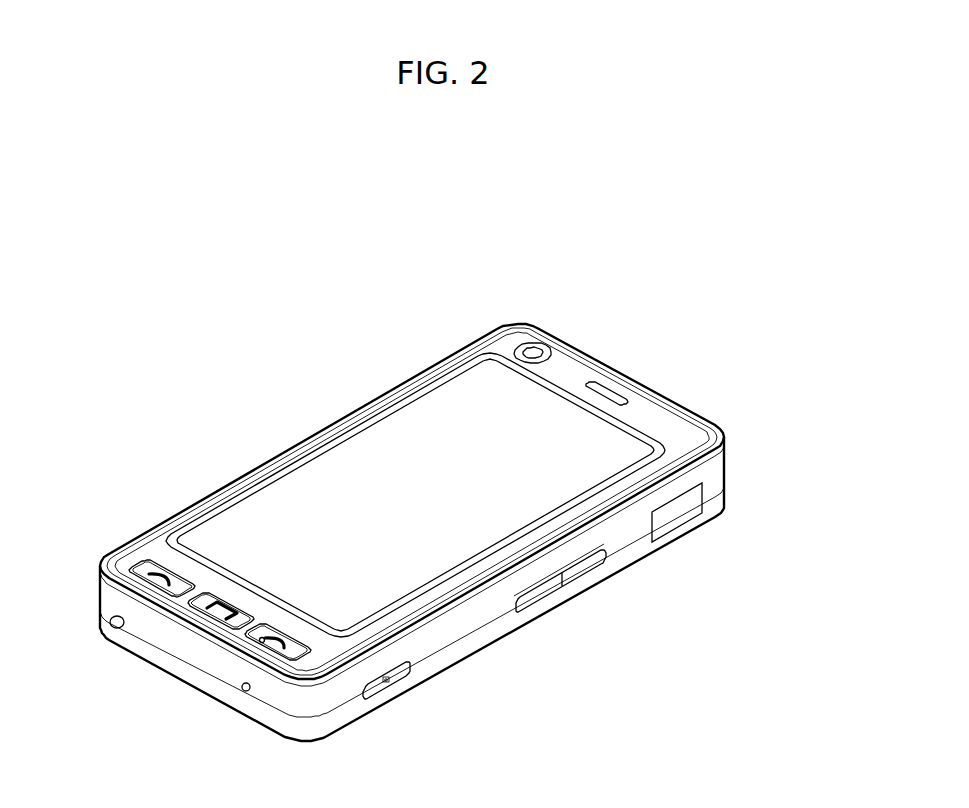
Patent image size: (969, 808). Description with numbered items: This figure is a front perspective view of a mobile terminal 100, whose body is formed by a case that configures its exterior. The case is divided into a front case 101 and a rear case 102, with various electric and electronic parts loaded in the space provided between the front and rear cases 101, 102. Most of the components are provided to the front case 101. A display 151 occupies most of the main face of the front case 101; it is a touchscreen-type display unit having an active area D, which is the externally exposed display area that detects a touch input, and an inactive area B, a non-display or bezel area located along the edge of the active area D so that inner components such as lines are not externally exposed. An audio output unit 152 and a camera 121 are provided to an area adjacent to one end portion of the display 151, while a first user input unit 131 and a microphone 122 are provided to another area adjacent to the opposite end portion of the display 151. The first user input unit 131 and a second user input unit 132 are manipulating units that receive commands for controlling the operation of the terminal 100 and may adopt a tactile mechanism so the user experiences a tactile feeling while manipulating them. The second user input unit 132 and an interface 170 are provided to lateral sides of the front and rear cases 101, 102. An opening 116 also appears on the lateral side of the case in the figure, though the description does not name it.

The mobile terminal 100 is at (392, 353).
The front case 101 is at (712, 467).
The rear case 102 is at (712, 498).
The interface 116 is at (117, 628).
The camera 121 is at (540, 352).
The microphone 122 is at (246, 691).
The first user input unit 131 is at (150, 568).
The second user input unit 132 is at (593, 563).
The display 151 is at (365, 452).
The audio output unit 152 is at (607, 395).
The interface 170 is at (672, 515).
The active area D is at (613, 452).
The inactive area B is at (666, 455).